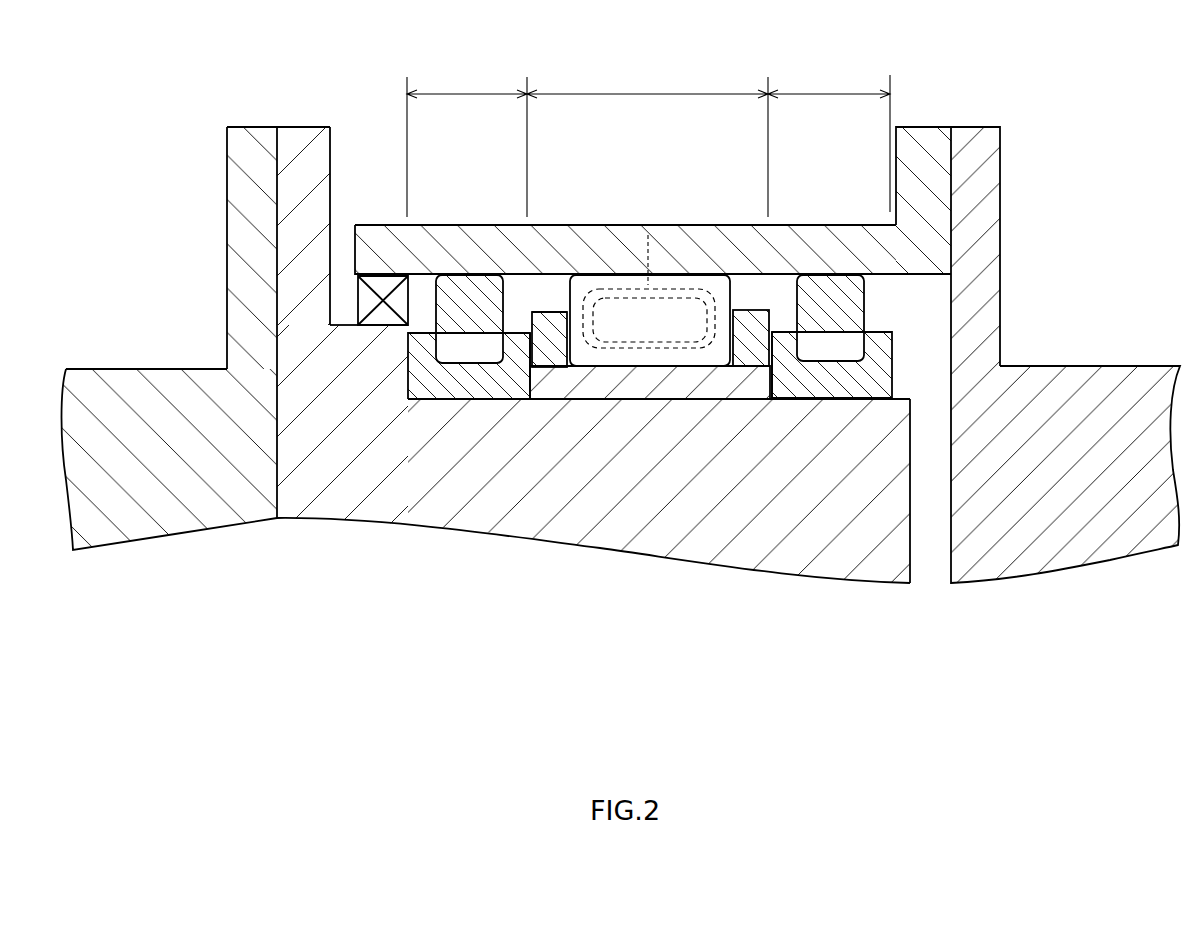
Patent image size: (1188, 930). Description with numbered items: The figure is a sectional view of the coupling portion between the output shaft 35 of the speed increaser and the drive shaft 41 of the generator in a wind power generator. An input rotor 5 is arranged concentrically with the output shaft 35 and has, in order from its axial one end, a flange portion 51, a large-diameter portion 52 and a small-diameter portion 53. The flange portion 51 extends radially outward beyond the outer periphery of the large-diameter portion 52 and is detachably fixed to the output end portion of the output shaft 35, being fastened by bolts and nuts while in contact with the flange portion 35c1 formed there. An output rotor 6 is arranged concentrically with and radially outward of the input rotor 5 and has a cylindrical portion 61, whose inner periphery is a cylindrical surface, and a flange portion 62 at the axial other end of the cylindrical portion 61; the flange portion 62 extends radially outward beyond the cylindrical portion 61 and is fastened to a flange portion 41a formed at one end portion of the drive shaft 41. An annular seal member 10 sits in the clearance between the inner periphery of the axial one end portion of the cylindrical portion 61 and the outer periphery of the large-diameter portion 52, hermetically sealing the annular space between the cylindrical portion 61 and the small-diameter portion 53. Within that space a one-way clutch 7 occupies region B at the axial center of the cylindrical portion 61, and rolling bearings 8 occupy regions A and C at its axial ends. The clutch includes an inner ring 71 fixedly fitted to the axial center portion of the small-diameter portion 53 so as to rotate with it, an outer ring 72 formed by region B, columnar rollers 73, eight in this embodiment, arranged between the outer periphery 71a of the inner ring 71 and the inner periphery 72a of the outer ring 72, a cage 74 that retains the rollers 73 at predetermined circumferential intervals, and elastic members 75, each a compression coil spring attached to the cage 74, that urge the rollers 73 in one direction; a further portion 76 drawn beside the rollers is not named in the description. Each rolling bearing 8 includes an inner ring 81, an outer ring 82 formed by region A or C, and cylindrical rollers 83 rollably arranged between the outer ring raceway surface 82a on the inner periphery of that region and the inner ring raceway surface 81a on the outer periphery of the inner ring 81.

The input rotor 5 is at (335, 529).
The output rotor 6 is at (783, 212).
The one-way clutch 7 is at (694, 408).
The rolling bearing 8 is at (486, 408).
The seal member 10 is at (387, 283).
The output shaft 35 is at (132, 361).
The flange portion 35c1 is at (250, 127).
The drive shaft 41 is at (1090, 356).
The flange portion 41a is at (976, 127).
The flange portion 51 is at (303, 127).
The large-diameter portion 52 is at (345, 325).
The small-diameter portion 53 is at (903, 390).
The cylindrical portion 61 is at (710, 215).
The flange portion 62 is at (926, 127).
The inner ring 71 is at (639, 387).
The outer periphery 71a is at (590, 382).
The outer ring 72 is at (648, 92).
The inner periphery 72a is at (619, 283).
The roller 73 is at (676, 283).
The cage 74 is at (554, 300).
The elastic member 75 is at (648, 235).
The side wall 76 is at (542, 312).
The inner ring 81 is at (437, 387).
The inner ring raceway surface 81a is at (522, 382).
The outer ring 82 is at (462, 92).
The outer ring raceway surface 82a is at (452, 283).
The cylindrical roller 83 is at (485, 290).